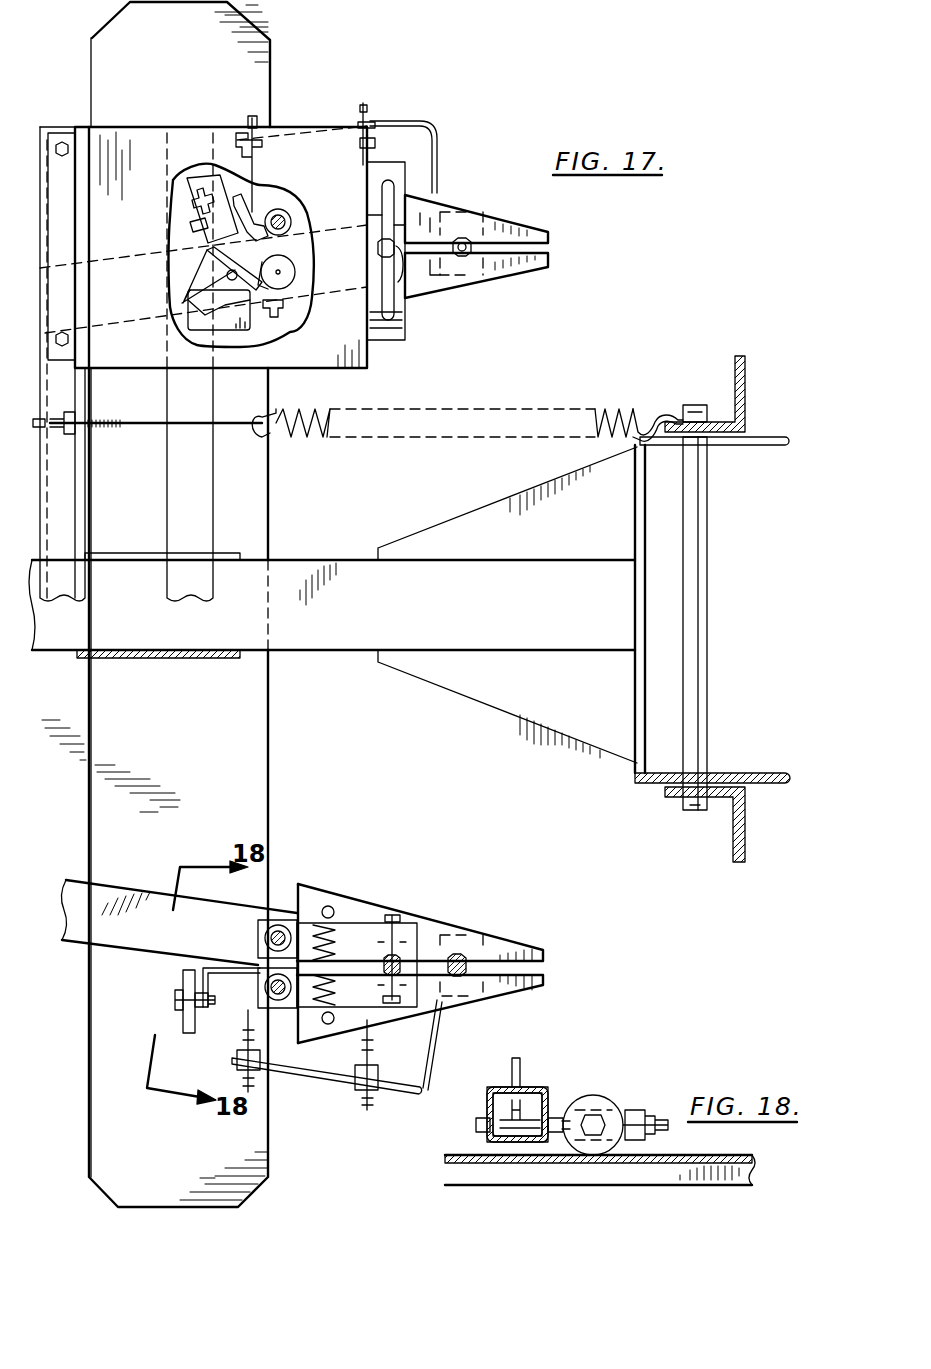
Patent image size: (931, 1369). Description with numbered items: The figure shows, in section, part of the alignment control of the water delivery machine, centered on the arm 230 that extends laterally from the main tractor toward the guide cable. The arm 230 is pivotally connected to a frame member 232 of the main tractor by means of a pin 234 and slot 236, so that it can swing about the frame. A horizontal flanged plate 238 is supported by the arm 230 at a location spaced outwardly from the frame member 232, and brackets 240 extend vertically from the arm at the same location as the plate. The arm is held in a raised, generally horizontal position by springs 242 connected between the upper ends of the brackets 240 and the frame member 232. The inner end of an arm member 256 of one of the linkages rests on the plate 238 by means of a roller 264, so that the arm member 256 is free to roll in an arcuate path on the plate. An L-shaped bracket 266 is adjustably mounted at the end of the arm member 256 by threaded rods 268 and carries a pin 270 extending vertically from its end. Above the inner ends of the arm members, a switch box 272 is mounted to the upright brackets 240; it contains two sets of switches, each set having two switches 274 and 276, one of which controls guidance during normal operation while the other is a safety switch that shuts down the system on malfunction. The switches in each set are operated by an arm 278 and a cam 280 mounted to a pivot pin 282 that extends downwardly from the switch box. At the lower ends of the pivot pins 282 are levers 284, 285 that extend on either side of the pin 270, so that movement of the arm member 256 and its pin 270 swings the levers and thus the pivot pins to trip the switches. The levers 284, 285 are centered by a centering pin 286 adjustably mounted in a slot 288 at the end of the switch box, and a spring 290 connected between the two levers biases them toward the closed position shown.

In FIG. 17, the arm 230 is at (320, 651).
In FIG. 17, the frame member 232 is at (745, 380).
In FIG. 17, the pin 234 is at (700, 573).
In FIG. 17, the slot 236 is at (740, 775).
In FIG. 17, the horizontal flanged plate 238 is at (258, 735).
In FIG. 18, the horizontal flanged plate 238 is at (450, 1155).
In FIG. 17, the brackets 240 is at (70, 524).
In FIG. 17, the springs 242 is at (601, 408).
In FIG. 17, the arm member 256 is at (120, 330).
In FIG. 18, the arm member 256 is at (490, 1090).
In FIG. 17, the roller 264 is at (170, 228).
In FIG. 18, the roller 264 is at (597, 1098).
In FIG. 17, the L-shaped bracket 266 is at (432, 128).
In FIG. 18, the L-shaped bracket 266 is at (630, 1112).
In FIG. 17, the threaded rods 268 is at (256, 120).
In FIG. 18, the threaded rods 268 is at (666, 1130).
In FIG. 17, the pin 270 is at (470, 262).
In FIG. 18, the pin 270 is at (518, 1058).
In FIG. 17, the switch box 272 is at (367, 365).
In FIG. 17, the switch 274 is at (190, 178).
In FIG. 17, the switch 276 is at (240, 340).
In FIG. 17, the arm 278 is at (215, 252).
In FIG. 17, the cam 280 is at (275, 208).
In FIG. 17, the pivot pin 282 is at (292, 218).
In FIG. 17, the lever 284 is at (530, 228).
In FIG. 17, the lever 285 is at (530, 265).
In FIG. 17, the centering pin 286 is at (400, 258).
In FIG. 17, the slot 288 is at (405, 318).
In FIG. 17, the spring 290 is at (340, 920).